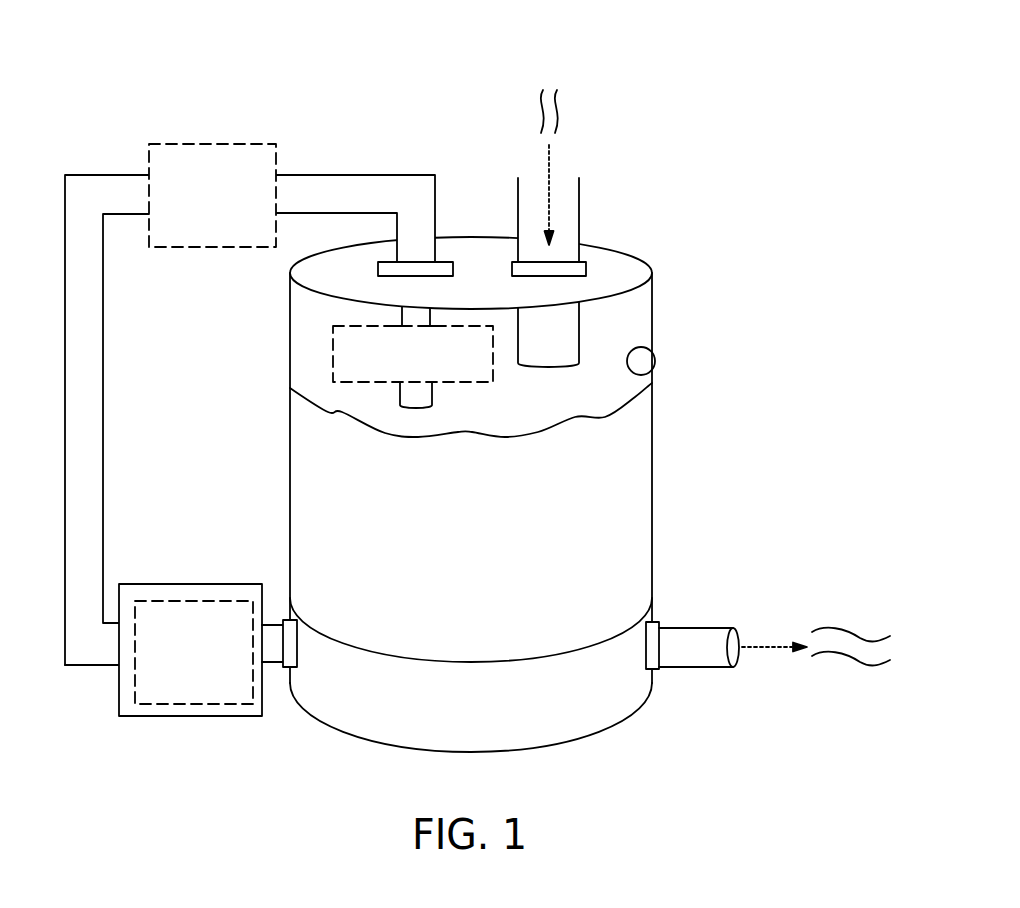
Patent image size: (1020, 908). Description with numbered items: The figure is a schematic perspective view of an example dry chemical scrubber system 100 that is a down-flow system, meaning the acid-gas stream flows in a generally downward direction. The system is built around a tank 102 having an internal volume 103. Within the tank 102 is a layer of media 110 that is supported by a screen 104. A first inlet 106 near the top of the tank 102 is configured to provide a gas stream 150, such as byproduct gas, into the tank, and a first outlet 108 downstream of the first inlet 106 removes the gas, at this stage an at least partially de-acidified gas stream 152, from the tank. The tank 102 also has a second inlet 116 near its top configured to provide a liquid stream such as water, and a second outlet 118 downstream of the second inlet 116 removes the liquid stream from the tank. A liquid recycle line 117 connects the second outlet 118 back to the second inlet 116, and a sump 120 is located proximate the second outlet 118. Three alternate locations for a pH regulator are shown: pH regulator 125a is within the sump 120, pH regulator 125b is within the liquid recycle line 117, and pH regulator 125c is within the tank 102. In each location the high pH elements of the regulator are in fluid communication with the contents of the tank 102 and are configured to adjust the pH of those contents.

The dry chemical scrubber system 100 is at (165, 66).
The tank 102 is at (523, 507).
The internal volume 103 is at (653, 378).
The screen 104 is at (560, 657).
The first inlet 106 is at (580, 230).
The first outlet 108 is at (737, 626).
The layer of media 110 is at (519, 390).
The second inlet 116 is at (437, 210).
The liquid recycle line 117 is at (103, 347).
The second outlet 118 is at (272, 666).
The sump 120 is at (143, 671).
The pH regulator 125a is at (170, 690).
The pH regulator 125b is at (237, 231).
The pH regulator 125c is at (389, 378).
The gas stream 150 is at (582, 114).
The de-acidified gas stream 152 is at (842, 668).